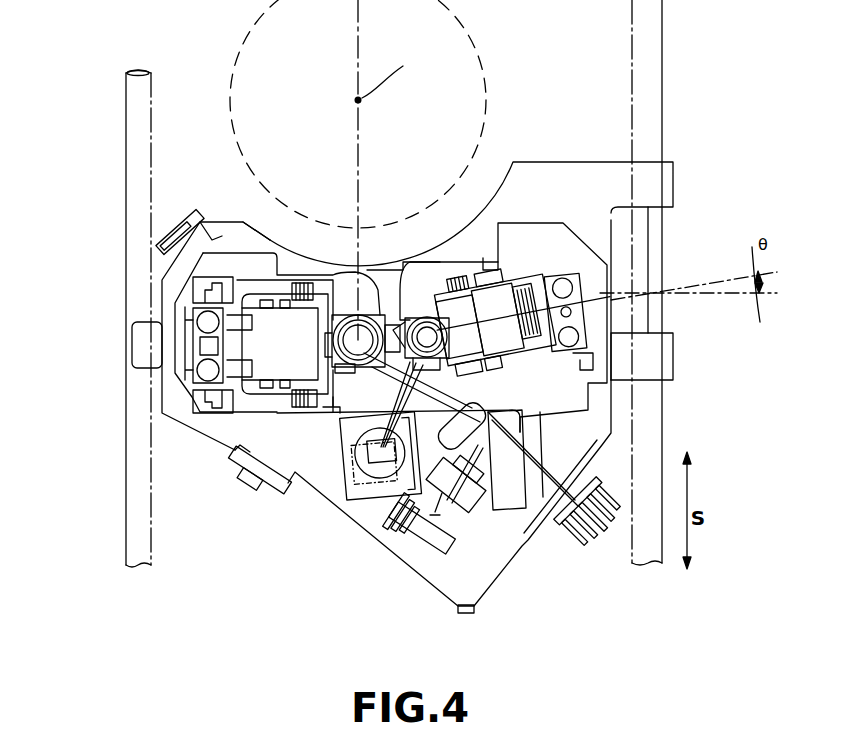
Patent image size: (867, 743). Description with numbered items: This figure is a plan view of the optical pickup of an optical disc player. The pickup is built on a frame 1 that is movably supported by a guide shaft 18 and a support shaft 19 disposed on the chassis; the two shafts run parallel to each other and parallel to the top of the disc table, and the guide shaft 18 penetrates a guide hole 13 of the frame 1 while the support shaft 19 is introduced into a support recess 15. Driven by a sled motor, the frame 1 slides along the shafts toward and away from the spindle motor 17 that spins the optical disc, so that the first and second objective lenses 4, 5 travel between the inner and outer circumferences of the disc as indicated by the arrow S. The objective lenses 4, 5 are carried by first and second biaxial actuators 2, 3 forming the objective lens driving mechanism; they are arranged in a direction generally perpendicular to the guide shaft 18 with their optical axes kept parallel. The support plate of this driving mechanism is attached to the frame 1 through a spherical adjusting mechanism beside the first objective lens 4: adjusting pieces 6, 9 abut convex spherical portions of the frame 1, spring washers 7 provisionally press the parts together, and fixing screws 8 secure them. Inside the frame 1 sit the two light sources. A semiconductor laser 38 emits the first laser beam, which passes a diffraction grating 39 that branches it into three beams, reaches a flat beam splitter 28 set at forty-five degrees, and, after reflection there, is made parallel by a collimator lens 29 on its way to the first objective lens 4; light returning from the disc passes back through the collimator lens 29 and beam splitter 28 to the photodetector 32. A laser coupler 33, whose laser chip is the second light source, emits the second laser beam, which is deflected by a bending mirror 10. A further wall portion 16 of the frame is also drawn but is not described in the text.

The frame 1 is at (347, 505).
The first biaxial actuator 2 is at (334, 383).
The second biaxial actuator 3 is at (590, 238).
The first objective lens 4 is at (356, 338).
The second objective lens 5 is at (426, 328).
The adjusting piece 6 is at (197, 232).
The spring washer 7 is at (181, 232).
The fixing screw 8 is at (172, 226).
The adjusting piece 9 is at (230, 460).
The bending mirror 10 is at (380, 468).
The guide hole 13 is at (655, 205).
The support recess 15 is at (132, 343).
The housing wall 16 is at (276, 240).
The spindle motor 17 is at (479, 56).
The guide shaft 18 is at (632, 67).
The support shaft 19 is at (127, 167).
The flat beam splitter 28 is at (505, 497).
The collimator lens 29 is at (520, 430).
The photodetector 32 is at (555, 528).
The laser coupler 33 is at (345, 556).
The semiconductor laser 38 is at (398, 550).
The diffraction grating 39 is at (477, 505).